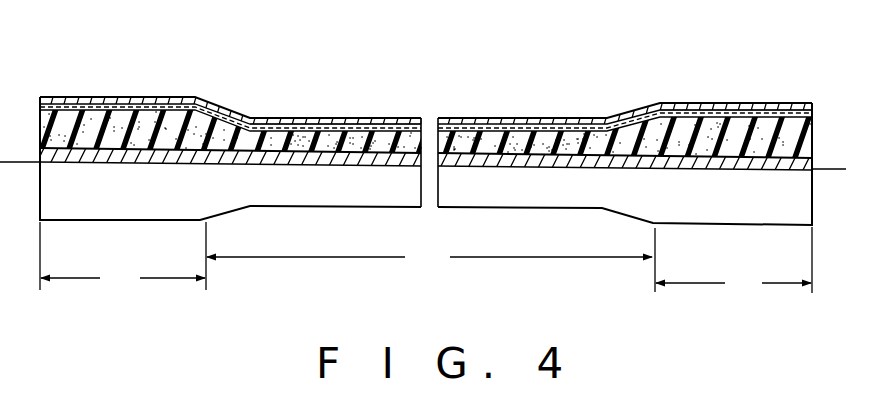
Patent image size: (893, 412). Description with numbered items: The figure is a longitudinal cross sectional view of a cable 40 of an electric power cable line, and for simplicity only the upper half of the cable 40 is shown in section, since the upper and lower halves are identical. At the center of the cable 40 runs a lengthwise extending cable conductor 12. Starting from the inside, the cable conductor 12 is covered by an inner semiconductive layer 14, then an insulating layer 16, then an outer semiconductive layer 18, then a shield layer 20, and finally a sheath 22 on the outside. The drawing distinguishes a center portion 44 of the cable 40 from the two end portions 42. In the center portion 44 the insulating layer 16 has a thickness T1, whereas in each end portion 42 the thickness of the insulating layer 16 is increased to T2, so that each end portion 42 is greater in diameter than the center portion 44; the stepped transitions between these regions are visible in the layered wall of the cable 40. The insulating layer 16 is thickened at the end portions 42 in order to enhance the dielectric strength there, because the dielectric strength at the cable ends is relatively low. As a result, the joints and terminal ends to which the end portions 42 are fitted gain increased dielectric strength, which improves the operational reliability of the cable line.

The cable 40 is at (75, 94).
The cable conductor 12 is at (160, 137).
The inner semiconductive layer 14 is at (215, 110).
The insulating layer 16 is at (385, 119).
The outer semiconductive layer 18 is at (452, 118).
The shield layer 20 is at (485, 126).
The sheath 22 is at (688, 102).
The end portion 42 is at (426, 260).
The center portion 44 is at (429, 260).
The insulating layer thickness at center portion T1 is at (307, 88).
The insulating layer thickness at end portion T2 is at (120, 72).